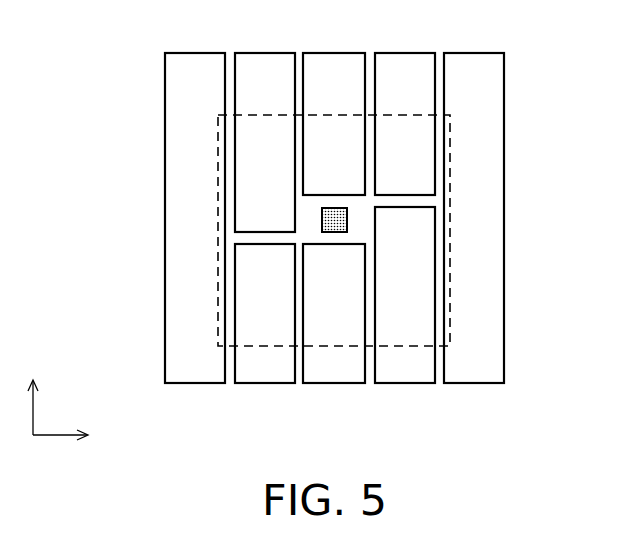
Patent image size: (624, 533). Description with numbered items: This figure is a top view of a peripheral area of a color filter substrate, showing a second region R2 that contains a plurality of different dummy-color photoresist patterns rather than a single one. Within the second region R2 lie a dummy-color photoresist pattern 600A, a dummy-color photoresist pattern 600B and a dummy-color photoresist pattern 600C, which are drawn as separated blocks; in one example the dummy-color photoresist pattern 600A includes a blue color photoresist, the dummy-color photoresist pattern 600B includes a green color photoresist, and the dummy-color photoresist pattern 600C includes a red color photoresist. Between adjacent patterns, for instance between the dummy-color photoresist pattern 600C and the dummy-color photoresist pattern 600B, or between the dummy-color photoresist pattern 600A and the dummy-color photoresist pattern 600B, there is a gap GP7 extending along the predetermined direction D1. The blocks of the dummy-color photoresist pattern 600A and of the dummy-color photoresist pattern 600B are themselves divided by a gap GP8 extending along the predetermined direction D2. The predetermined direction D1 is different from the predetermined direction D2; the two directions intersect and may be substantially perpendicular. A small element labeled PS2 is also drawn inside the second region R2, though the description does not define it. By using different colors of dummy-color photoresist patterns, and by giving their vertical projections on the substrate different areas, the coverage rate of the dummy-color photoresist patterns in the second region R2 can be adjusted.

The dummy-color photoresist pattern 600A is at (333, 65).
The dummy-color photoresist pattern 600B is at (262, 65).
The dummy-color photoresist pattern 600C is at (192, 373).
The second region R2 is at (222, 153).
The photo spacer PS2 is at (322, 220).
The gap GP8 is at (428, 202).
The gap GP7 is at (439, 381).
The predetermined direction D1 is at (36, 390).
The predetermined direction D2 is at (75, 437).